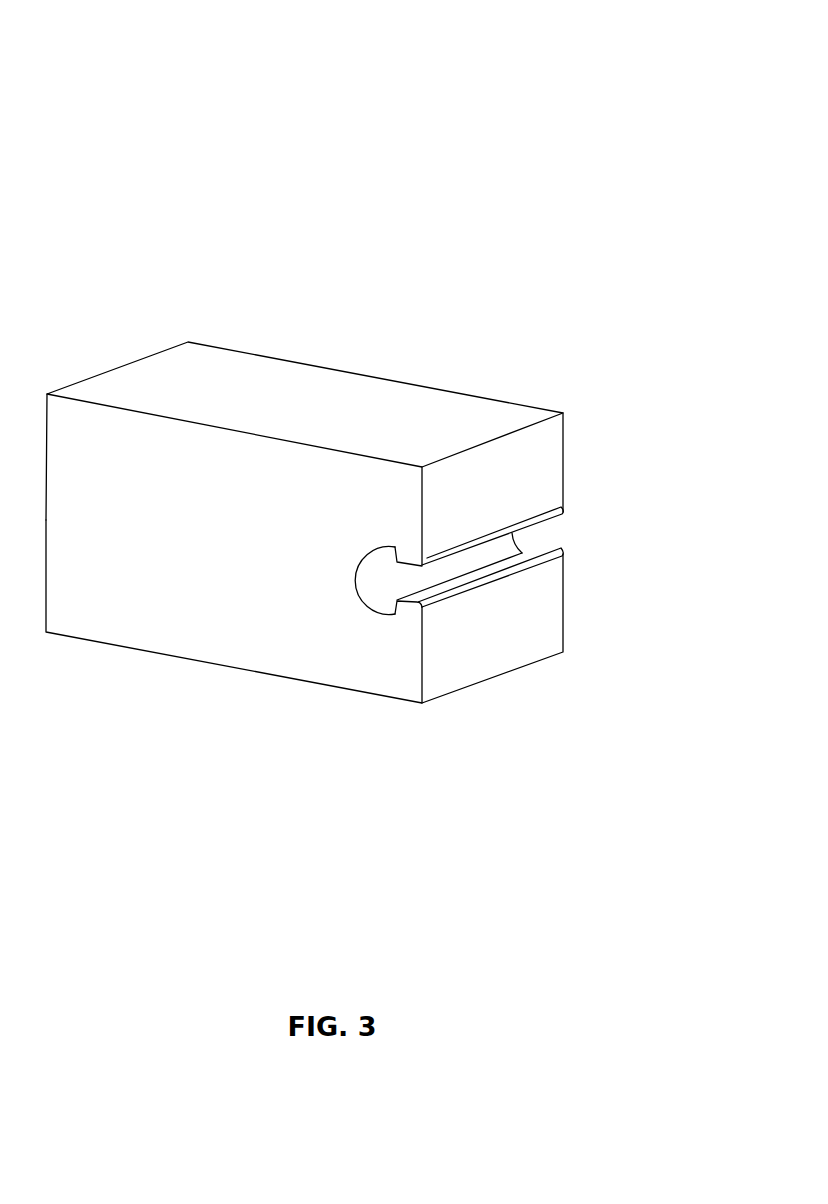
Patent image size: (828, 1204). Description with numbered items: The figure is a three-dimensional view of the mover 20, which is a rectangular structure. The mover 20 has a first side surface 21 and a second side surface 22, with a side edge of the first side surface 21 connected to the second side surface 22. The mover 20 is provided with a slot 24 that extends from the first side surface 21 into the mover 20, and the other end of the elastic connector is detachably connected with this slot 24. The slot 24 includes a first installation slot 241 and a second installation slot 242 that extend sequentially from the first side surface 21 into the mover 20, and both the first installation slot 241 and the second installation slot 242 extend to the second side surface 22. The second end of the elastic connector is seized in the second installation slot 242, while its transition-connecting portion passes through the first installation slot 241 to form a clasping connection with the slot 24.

The mover 20 is at (318, 70).
The first side surface 21 is at (555, 470).
The second side surface 22 is at (200, 640).
The slot 24 is at (414, 701).
The first installation slot 241 is at (463, 580).
The second installation slot 242 is at (397, 595).